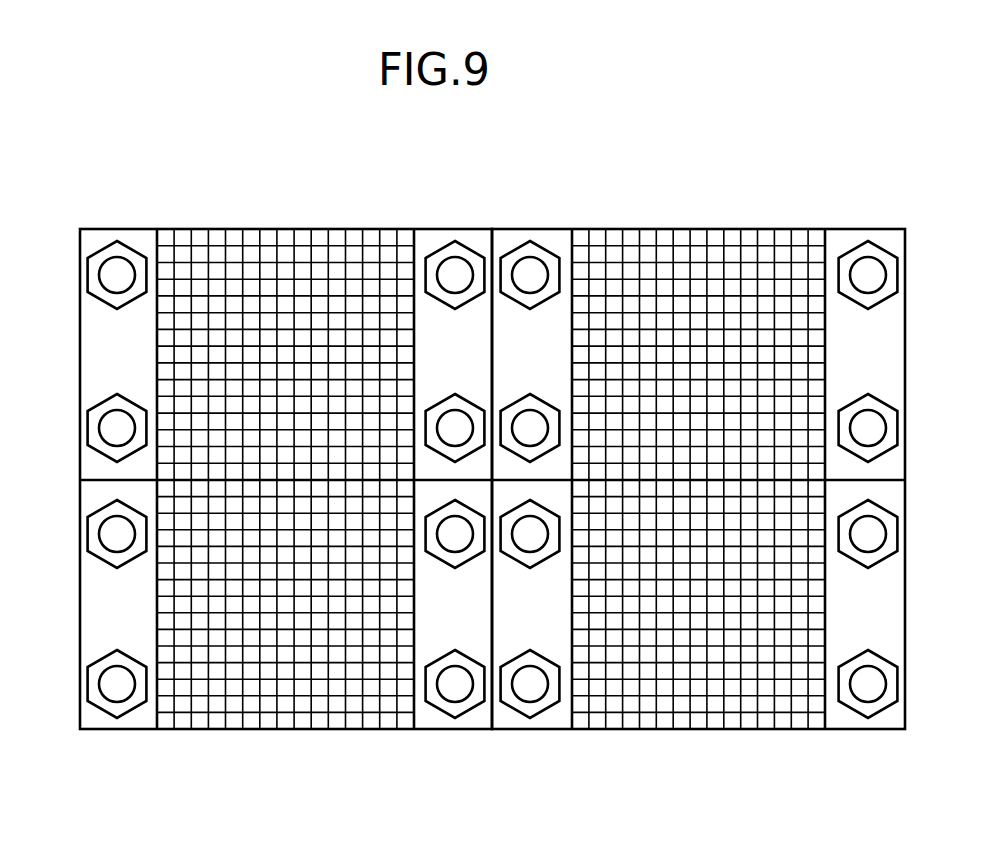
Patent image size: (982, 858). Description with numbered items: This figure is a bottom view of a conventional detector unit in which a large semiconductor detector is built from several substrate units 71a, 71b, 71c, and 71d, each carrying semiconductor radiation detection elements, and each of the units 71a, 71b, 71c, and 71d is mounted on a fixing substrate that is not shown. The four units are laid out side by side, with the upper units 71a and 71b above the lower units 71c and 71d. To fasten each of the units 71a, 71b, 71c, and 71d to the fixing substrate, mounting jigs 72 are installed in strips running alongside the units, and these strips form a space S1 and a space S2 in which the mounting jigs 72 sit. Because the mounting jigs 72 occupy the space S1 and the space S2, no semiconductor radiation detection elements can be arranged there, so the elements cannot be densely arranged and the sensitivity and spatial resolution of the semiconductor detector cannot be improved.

The space S1 is at (261, 473).
The space S2 is at (672, 473).
The substrate unit 71a is at (268, 238).
The substrate unit 71b is at (712, 240).
The substrate unit 71c is at (269, 722).
The substrate unit 71d is at (713, 722).
The mounting jig 72 is at (118, 280).